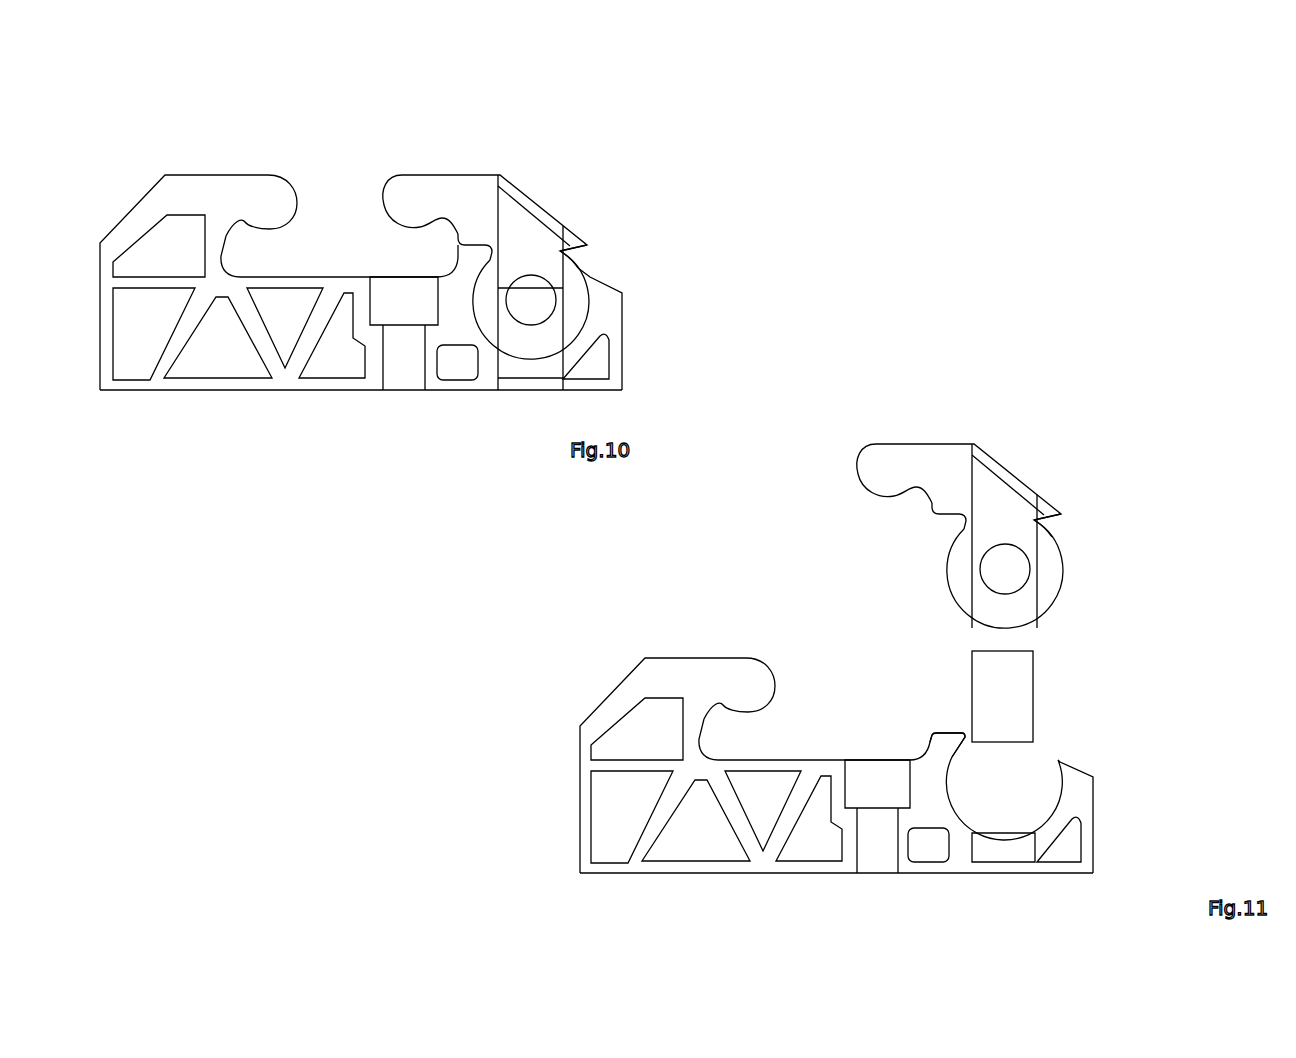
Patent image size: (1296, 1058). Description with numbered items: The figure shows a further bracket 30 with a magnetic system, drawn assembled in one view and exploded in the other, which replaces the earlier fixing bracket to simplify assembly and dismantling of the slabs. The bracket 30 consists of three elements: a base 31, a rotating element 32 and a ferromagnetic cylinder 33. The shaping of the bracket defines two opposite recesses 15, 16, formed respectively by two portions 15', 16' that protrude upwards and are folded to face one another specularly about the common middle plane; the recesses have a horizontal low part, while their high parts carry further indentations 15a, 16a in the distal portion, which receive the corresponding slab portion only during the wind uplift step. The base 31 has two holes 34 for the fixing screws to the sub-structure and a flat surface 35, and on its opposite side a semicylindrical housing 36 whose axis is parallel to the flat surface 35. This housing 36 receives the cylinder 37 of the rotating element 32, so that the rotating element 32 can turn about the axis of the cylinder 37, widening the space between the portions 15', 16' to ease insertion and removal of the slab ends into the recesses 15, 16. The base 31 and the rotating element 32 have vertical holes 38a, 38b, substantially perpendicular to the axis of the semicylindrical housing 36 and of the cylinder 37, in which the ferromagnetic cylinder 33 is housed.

In FIG. 10, the bracket 30 is at (377, 113).
In FIG. 11, the base 31 is at (573, 687).
In FIG. 10, the rotating element 32 is at (522, 211).
In FIG. 11, the rotating element 32 is at (972, 476).
In FIG. 11, the ferromagnetic cylinder 33 is at (1057, 687).
In FIG. 10, the recess 15 is at (361, 279).
In FIG. 11, the recess 15 is at (803, 755).
In FIG. 10, the protruding portion 15' is at (207, 156).
In FIG. 11, the protruding portion 15' is at (731, 642).
In FIG. 10, the indentation 15a is at (280, 250).
In FIG. 11, the indentation 15a is at (748, 729).
In FIG. 10, the recess 16 is at (522, 236).
In FIG. 11, the recess 16 is at (926, 704).
In FIG. 10, the protruding portion 16' is at (417, 175).
In FIG. 11, the protruding portion 16' is at (866, 438).
In FIG. 10, the indentation 16a is at (442, 219).
In FIG. 11, the indentation 16a is at (908, 490).
In FIG. 10, the holes 34 is at (400, 363).
In FIG. 11, the holes 34 is at (877, 816).
In FIG. 10, the flat surface 35 is at (305, 415).
In FIG. 11, the flat surface 35 is at (755, 875).
In FIG. 10, the semicylindrical housing 36 is at (590, 312).
In FIG. 11, the semicylindrical housing 36 is at (1005, 574).
In FIG. 10, the cylinder 37 is at (578, 268).
In FIG. 11, the cylinder 37 is at (1055, 582).
In FIG. 10, the vertical hole 38a is at (513, 368).
In FIG. 11, the vertical hole 38a is at (1007, 853).
In FIG. 10, the vertical hole 38b is at (508, 241).
In FIG. 11, the vertical hole 38b is at (997, 500).